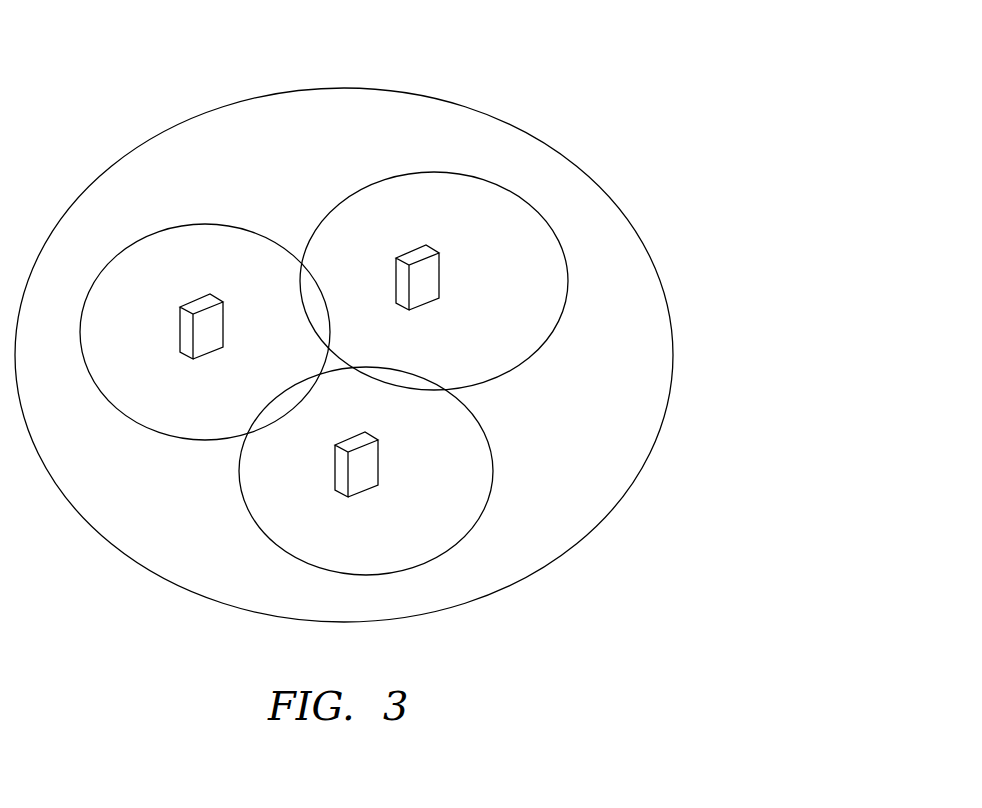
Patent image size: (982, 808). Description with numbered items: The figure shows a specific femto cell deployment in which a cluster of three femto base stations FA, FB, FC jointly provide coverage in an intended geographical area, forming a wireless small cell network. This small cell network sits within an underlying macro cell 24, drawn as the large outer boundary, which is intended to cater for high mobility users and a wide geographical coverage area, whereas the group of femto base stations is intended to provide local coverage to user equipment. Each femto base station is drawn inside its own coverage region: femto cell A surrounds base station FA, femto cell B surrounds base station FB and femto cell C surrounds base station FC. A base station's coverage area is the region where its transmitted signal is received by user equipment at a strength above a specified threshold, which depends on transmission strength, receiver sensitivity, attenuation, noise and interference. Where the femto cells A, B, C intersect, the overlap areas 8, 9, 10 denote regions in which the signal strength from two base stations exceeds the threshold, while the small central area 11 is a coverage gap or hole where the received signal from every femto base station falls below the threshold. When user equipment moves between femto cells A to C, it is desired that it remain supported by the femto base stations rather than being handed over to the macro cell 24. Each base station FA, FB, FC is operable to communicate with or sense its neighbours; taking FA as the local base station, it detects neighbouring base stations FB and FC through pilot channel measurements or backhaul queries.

The macro cell 24 is at (564, 138).
The femto cell A is at (552, 335).
The femto cell B is at (130, 418).
The femto cell C is at (490, 500).
The femto base station FA is at (441, 277).
The femto base station FB is at (226, 326).
The femto base station FC is at (380, 463).
The overlap area 8 is at (303, 273).
The overlap area 9 is at (263, 422).
The overlap area 10 is at (421, 385).
The coverage gap 11 is at (349, 353).